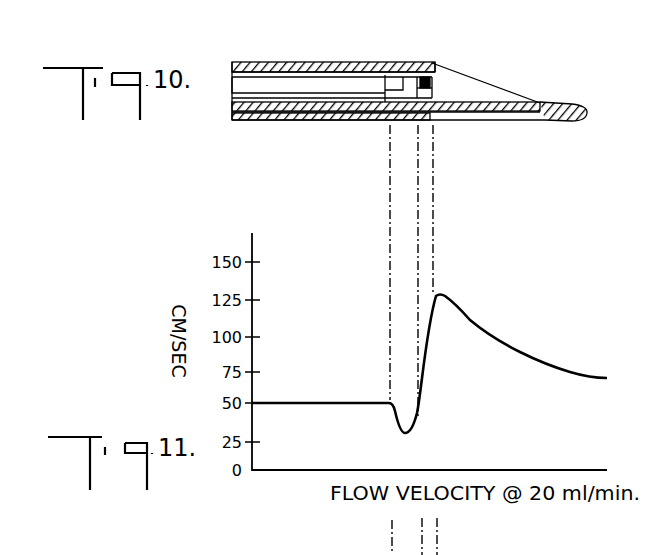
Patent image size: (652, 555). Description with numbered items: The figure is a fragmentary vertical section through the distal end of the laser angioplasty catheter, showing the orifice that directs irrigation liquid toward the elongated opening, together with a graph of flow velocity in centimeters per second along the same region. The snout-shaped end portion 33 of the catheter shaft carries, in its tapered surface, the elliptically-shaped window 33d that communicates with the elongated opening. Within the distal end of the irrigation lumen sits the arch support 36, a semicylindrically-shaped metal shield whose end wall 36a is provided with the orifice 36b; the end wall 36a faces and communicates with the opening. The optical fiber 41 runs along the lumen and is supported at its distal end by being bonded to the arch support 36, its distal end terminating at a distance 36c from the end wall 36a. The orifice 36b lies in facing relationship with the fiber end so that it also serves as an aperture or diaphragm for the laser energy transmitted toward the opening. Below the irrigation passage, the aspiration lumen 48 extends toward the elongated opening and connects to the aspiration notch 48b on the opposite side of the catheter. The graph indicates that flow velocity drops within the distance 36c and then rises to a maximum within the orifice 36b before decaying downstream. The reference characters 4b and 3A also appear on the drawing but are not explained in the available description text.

The arch support 36 is at (300, 72).
The optical fiber 41 is at (262, 82).
The end wall 36a is at (432, 78).
The chamber 4b is at (400, 86).
The distance 36c is at (413, 75).
The orifice 36b is at (433, 92).
The catheter tip 3A is at (484, 98).
The window 33d is at (485, 85).
The aspiration lumen 48 is at (327, 108).
The aspiration notch 48b is at (477, 123).
The snout-shaped end portion 33 is at (506, 127).